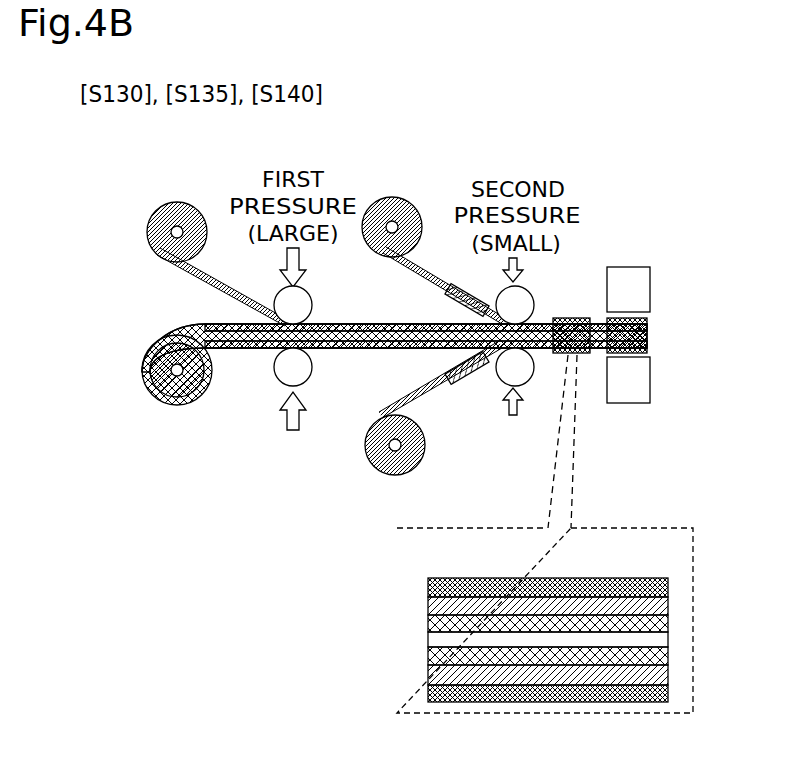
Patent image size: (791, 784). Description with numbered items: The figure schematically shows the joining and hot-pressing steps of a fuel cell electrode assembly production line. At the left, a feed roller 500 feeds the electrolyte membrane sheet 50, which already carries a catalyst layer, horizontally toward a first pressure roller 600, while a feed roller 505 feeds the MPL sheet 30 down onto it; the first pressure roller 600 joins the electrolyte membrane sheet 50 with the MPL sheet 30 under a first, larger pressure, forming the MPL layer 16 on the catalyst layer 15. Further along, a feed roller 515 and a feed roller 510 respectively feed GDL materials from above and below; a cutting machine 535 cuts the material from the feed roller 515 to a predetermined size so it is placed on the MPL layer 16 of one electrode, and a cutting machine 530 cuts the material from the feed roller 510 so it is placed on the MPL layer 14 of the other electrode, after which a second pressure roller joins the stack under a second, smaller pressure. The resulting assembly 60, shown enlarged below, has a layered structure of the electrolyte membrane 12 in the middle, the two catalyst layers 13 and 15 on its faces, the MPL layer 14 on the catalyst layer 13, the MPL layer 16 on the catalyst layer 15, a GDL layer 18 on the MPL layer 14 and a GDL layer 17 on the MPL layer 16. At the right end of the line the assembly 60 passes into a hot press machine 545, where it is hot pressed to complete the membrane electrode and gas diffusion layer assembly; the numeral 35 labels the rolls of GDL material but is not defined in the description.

The MPL sheet 30 is at (178, 203).
The feed roller 505 is at (153, 225).
The second film roll 35 is at (410, 203).
The feed roller 515 is at (389, 199).
The feed roller 510 is at (369, 460).
The cutting machine 535 is at (466, 296).
The cutting machine 530 is at (464, 382).
The electrolyte membrane sheet 50 is at (158, 400).
The feed roller 500 is at (148, 368).
The first pressure roller 600 is at (311, 303).
The hot press machine 545 is at (633, 267).
The assembly 60 is at (555, 313).
The GDL layer 17 is at (428, 588).
The MPL layer 16 is at (428, 606).
The catalyst layer 15 is at (428, 624).
The electrolyte membrane 12 is at (428, 640).
The catalyst layer 13 is at (428, 656).
The MPL layer 14 is at (428, 676).
The GDL layer 18 is at (428, 694).